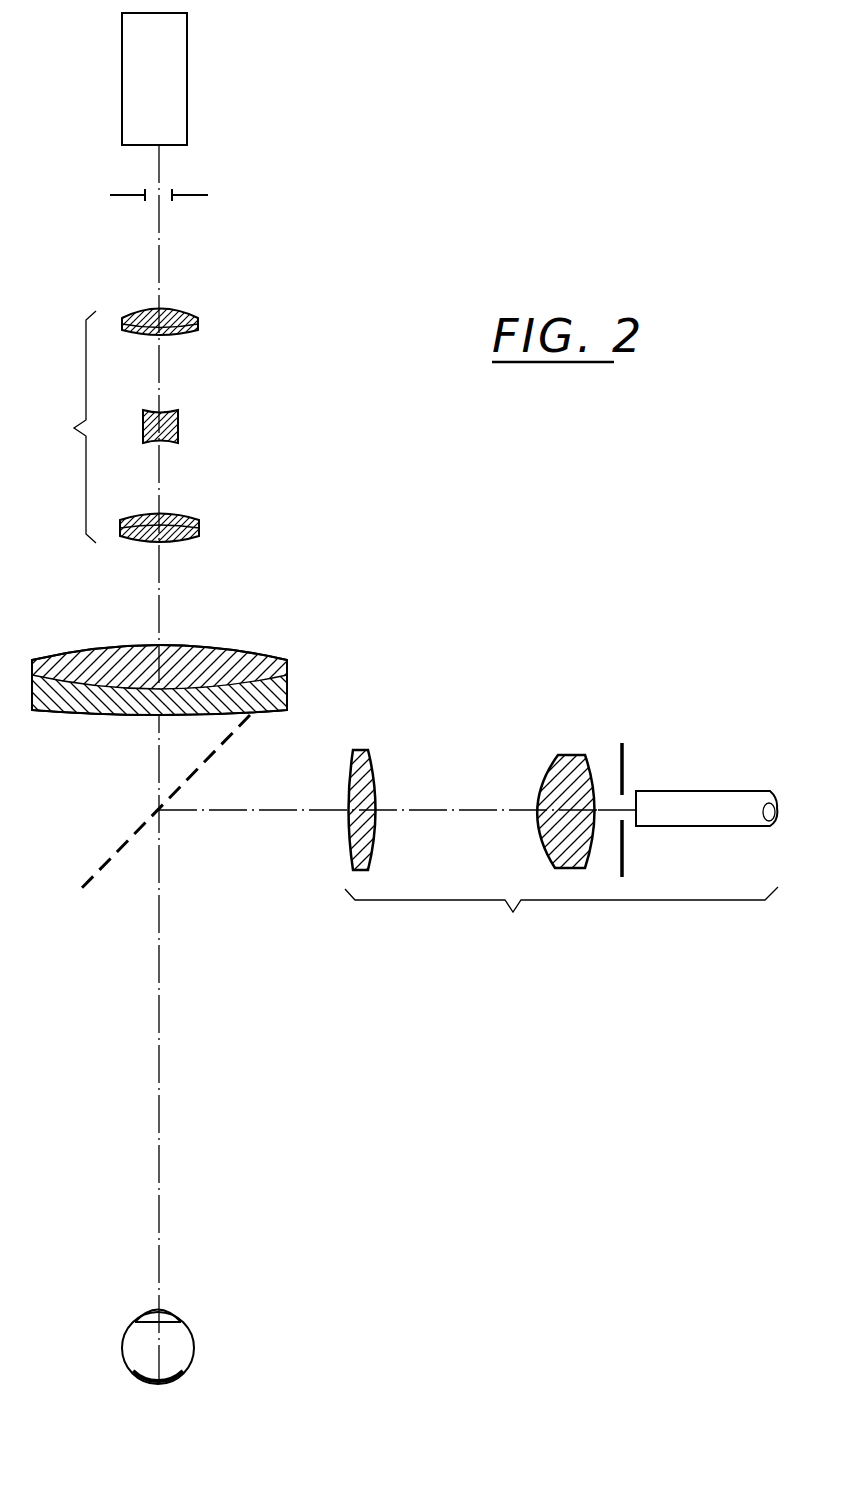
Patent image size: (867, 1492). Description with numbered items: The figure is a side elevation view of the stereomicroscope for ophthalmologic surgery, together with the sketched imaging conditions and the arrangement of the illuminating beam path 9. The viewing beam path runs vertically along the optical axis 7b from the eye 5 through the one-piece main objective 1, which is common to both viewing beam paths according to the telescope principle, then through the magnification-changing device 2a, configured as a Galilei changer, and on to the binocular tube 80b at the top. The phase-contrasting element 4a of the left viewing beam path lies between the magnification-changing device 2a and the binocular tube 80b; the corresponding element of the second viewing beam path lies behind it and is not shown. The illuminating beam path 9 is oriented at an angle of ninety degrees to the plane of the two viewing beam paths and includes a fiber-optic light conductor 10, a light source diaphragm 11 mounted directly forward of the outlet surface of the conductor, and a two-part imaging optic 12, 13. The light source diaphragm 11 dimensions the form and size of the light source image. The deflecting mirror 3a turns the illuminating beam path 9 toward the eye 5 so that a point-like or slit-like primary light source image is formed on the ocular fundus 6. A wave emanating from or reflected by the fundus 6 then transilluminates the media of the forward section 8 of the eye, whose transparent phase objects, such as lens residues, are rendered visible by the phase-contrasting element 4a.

The image sensor / detector 80b is at (122, 57).
The phase-contrasting element 4a is at (199, 195).
The magnification-changing device 2a is at (110, 426).
The main objective 1 is at (247, 659).
The deflecting mirror 3a is at (97, 871).
The imaging optic 13 is at (362, 768).
The imaging optic 12 is at (568, 773).
The light source diaphragm 11 is at (622, 755).
The fiber-optic light conductor 10 is at (680, 797).
The illuminating beam path 9 is at (561, 922).
The optical axis 7b is at (158, 1033).
The eye 5 is at (124, 1338).
The forward section of the eye 8 is at (171, 1319).
The ocular fundus 6 is at (180, 1382).